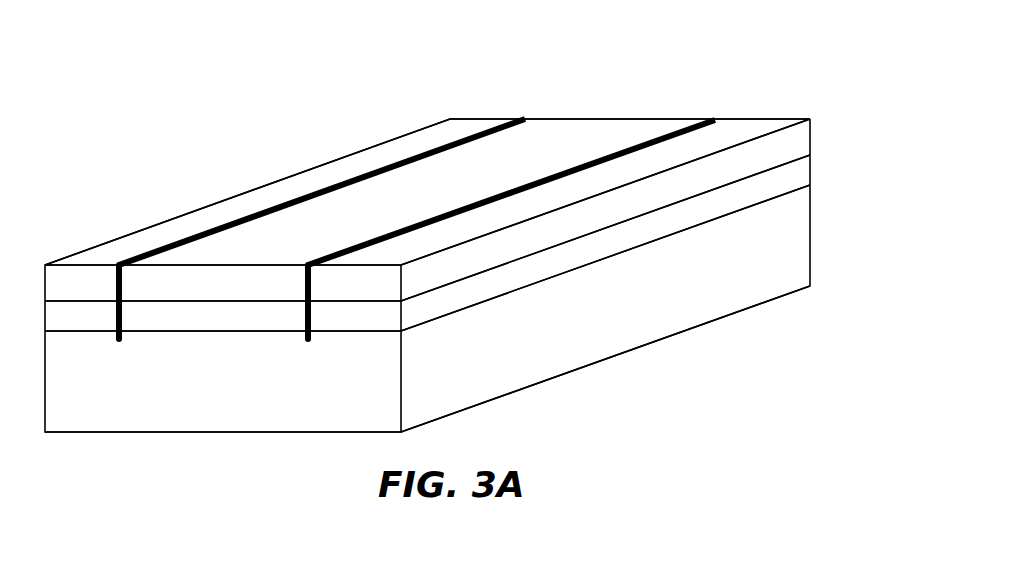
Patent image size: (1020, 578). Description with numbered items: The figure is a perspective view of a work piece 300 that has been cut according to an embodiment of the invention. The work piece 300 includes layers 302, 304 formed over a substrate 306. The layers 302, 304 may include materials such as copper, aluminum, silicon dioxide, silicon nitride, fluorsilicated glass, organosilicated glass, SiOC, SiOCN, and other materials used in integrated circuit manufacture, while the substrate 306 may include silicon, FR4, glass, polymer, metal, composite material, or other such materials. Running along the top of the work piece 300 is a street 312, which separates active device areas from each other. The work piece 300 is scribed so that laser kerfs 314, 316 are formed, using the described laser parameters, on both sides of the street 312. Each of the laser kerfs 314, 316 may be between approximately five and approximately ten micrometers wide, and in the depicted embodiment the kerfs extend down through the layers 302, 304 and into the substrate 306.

The work piece 300 is at (427, 274).
The layer 302 is at (810, 135).
The layer 304 is at (810, 177).
The substrate 306 is at (810, 213).
The street 312 is at (571, 145).
The laser kerf 314 is at (525, 118).
The laser kerf 316 is at (700, 120).